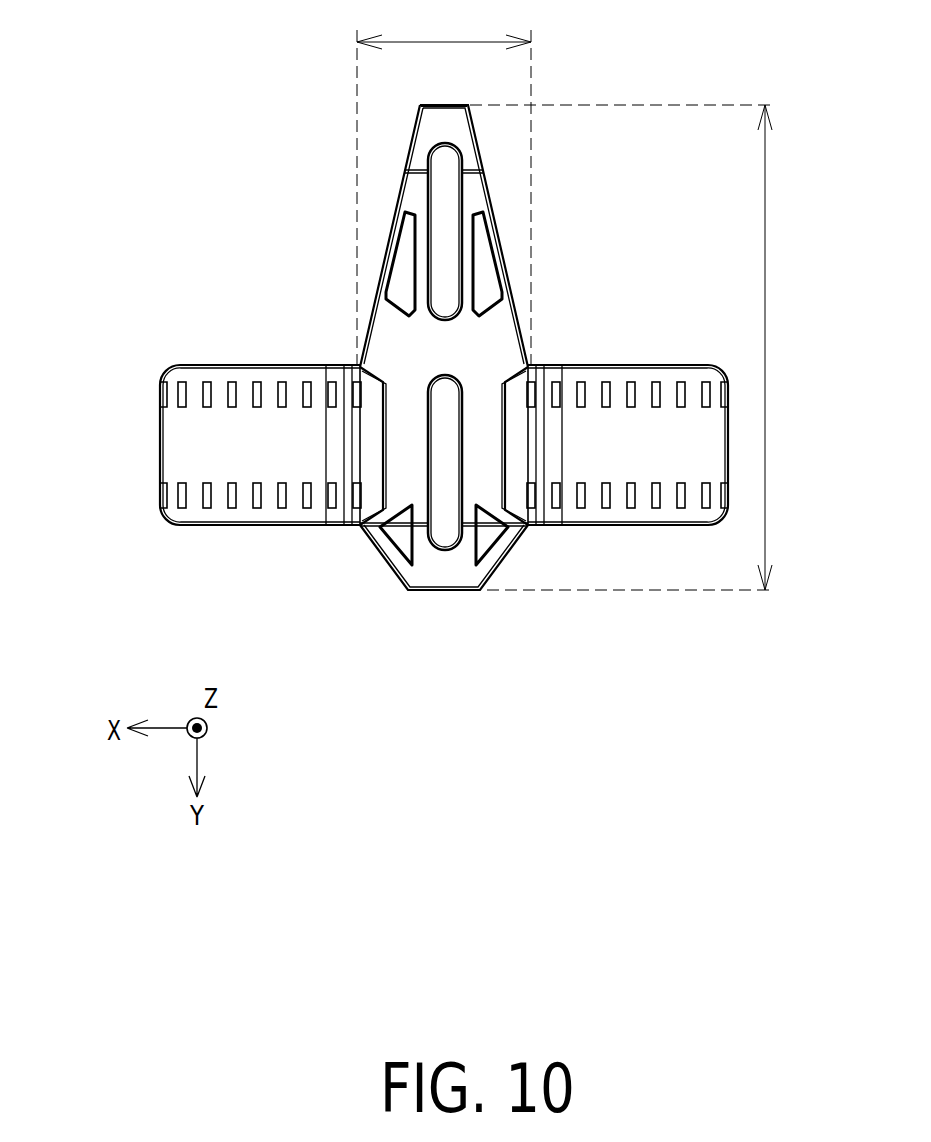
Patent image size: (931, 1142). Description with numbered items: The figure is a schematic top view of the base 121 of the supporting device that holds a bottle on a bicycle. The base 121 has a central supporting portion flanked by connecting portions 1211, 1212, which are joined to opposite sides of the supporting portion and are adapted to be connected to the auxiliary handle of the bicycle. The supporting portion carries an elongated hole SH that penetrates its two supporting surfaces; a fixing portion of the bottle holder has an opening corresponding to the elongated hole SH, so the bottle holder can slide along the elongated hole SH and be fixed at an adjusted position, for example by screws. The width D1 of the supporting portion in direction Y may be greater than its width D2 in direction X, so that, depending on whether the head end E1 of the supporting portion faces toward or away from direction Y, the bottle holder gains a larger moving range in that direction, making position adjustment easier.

The base 121 is at (143, 51).
The connecting portion 1211 is at (638, 372).
The connecting portion 1212 is at (249, 375).
The elongated hole SH is at (428, 188).
The head end E1 is at (444, 104).
The width of the supporting portion in direction Y D1 is at (634, 347).
The width of the supporting portion in direction X D2 is at (444, 189).